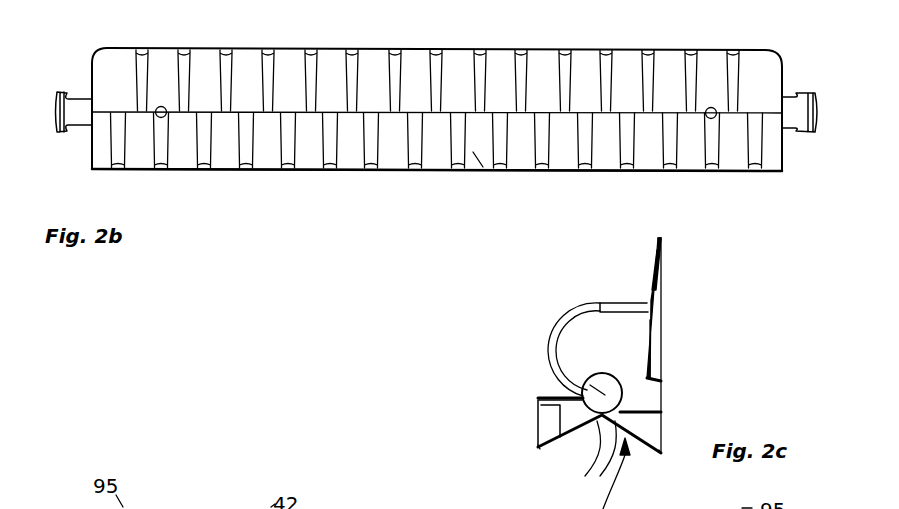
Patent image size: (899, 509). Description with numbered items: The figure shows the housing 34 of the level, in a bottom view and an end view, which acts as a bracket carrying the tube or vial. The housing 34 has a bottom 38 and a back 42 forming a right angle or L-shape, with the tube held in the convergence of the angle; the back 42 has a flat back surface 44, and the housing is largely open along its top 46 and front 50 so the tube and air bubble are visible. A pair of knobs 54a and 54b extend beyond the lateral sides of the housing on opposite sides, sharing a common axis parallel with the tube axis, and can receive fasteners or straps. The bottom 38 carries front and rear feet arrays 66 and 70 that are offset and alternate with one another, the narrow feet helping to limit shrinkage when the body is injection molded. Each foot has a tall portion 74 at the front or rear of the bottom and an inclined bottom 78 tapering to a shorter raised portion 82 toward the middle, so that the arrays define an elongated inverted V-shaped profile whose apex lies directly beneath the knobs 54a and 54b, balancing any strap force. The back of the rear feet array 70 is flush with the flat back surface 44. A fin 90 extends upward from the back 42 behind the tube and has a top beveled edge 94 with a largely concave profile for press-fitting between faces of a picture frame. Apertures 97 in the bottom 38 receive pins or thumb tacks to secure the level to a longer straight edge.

In FIG. 2B, the housing 34 is at (442, 138).
In FIG. 2B, the bottom 38 is at (473, 152).
In FIG. 2C, the back 42 is at (663, 361).
In FIG. 2C, the flat back surface 44 is at (662, 345).
In FIG. 2C, the top 46 is at (630, 302).
In FIG. 2C, the front 50 is at (582, 390).
In FIG. 2B, the knob 54a is at (68, 134).
In FIG. 2B, the knob 54b is at (797, 130).
In FIG. 2C, the knob 54b is at (587, 380).
In FIG. 2B, the front feet array 66 is at (393, 68).
In FIG. 2C, the front feet array 66 is at (537, 423).
In FIG. 2B, the rear feet array 70 is at (372, 152).
In FIG. 2C, the rear feet array 70 is at (667, 430).
In FIG. 2C, the tall portion 74 is at (540, 450).
In FIG. 2C, the inclined bottom 78 is at (566, 440).
In FIG. 2C, the shorter raised portion 82 is at (588, 463).
In FIG. 2C, the fin 90 is at (662, 275).
In FIG. 2C, the top beveled edge 94 is at (658, 238).
In FIG. 2B, the aperture 97 is at (161, 106).